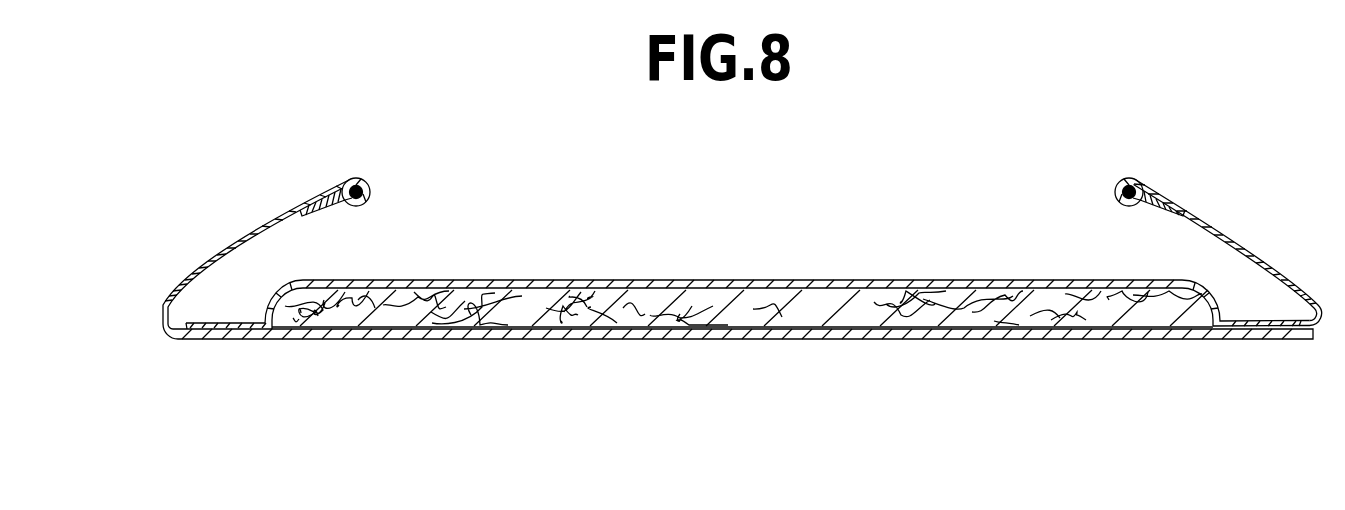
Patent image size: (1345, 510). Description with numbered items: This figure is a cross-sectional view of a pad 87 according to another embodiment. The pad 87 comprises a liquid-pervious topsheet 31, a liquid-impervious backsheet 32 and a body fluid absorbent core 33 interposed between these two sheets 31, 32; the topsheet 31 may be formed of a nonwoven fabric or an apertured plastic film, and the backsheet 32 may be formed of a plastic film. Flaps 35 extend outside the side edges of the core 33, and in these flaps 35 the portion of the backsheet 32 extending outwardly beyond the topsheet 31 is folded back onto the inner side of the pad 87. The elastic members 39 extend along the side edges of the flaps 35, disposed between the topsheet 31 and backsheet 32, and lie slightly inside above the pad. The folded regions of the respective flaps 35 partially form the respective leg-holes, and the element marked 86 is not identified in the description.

The pad 87 is at (857, 213).
The frame member 86 is at (161, 316).
The flaps 35 is at (203, 342).
The elastic members 39 is at (356, 178).
The liquid-pervious topsheet 31 is at (1098, 280).
The liquid-impervious backsheet 32 is at (1066, 341).
The body fluid absorbent core 33 is at (978, 292).